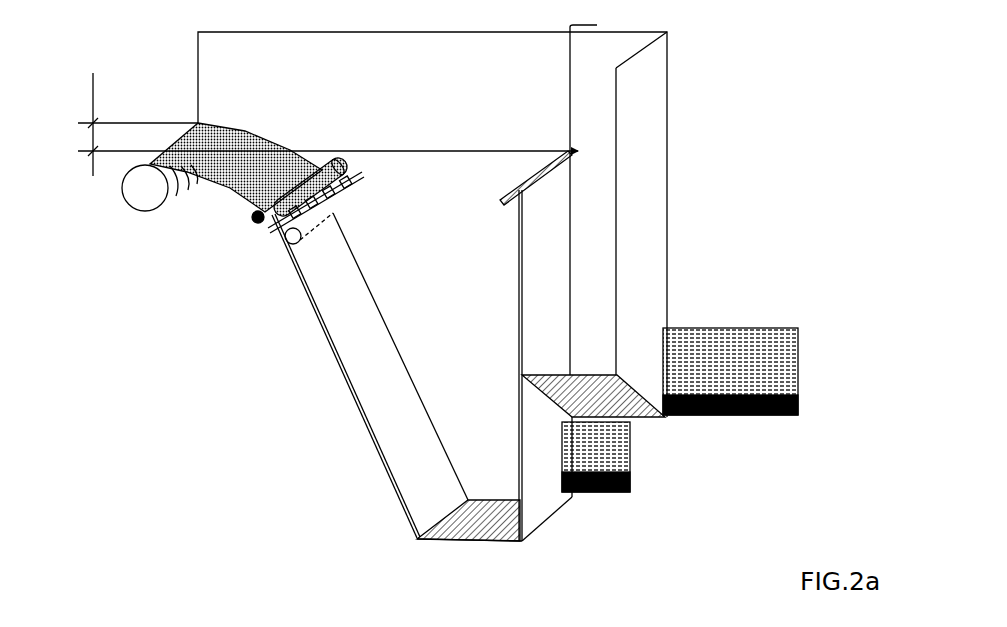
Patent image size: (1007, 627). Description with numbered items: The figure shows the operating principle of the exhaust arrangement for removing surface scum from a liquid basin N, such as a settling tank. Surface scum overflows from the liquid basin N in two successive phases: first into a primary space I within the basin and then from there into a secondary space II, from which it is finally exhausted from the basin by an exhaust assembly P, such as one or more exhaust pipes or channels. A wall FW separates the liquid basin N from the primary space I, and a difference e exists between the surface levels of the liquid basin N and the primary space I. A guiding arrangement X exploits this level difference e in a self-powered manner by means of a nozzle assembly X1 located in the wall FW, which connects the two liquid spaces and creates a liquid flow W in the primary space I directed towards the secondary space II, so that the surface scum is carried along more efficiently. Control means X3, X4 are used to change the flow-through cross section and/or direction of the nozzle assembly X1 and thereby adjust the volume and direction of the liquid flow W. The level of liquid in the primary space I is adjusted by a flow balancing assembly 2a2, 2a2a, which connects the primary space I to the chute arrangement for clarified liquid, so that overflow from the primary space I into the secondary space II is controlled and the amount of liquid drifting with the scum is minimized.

The difference in surface levels e is at (92, 100).
The guiding arrangement X is at (373, 129).
The nozzle assembly X1 is at (359, 175).
The liquid flow W is at (381, 180).
The control means X3 is at (237, 278).
The control means X4 is at (290, 244).
The primary space I is at (462, 247).
The secondary space II is at (607, 225).
The exhaust assembly P is at (743, 323).
The liquid basin N is at (131, 369).
The wall FW is at (348, 393).
The flow balancing assembly 2a2 is at (654, 477).
The roller surface 2a2a is at (607, 492).